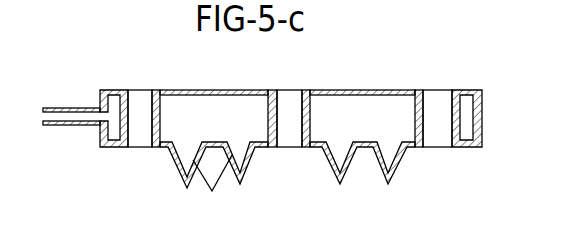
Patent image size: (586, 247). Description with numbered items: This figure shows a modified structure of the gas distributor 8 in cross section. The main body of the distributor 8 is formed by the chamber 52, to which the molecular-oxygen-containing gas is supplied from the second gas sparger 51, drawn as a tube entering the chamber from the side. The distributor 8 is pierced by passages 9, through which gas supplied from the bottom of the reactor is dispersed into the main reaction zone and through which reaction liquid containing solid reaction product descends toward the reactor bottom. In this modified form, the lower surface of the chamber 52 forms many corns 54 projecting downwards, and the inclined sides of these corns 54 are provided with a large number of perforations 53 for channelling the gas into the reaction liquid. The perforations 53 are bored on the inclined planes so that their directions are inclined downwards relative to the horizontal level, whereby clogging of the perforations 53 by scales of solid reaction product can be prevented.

The distributor 8 is at (406, 91).
The passages 9 is at (141, 100).
The second gas sparger 51 is at (58, 127).
The chamber 52 is at (213, 106).
The perforations 53 is at (212, 192).
The corns 54 is at (178, 171).